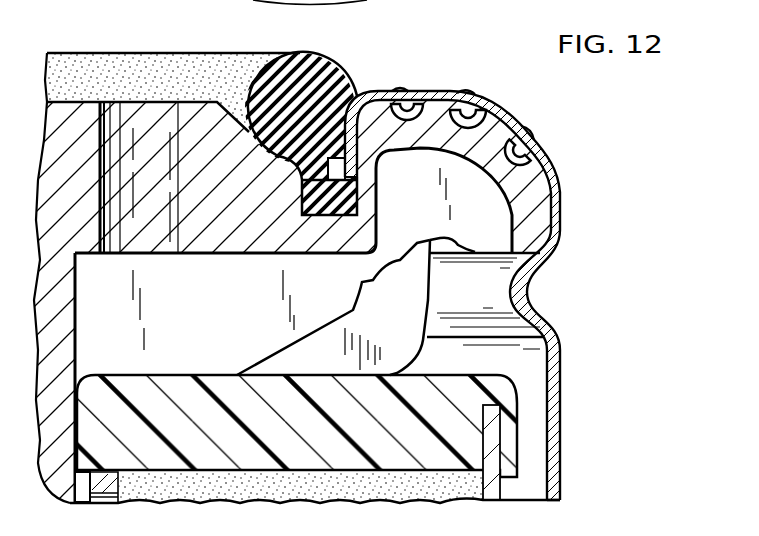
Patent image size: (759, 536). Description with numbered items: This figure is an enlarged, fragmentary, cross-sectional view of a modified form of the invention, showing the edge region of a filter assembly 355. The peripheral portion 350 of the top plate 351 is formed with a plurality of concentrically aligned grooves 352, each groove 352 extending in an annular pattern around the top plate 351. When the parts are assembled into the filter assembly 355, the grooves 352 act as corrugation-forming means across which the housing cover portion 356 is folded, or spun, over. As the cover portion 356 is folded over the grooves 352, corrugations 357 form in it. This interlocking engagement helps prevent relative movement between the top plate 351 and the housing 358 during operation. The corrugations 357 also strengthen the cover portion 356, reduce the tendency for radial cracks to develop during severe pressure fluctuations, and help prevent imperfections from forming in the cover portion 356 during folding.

The peripheral portion 350 is at (437, 122).
The top plate 351 is at (195, 102).
The grooves 352 is at (397, 112).
The filter assembly 355 is at (575, 329).
The housing cover portion 356 is at (562, 183).
The corrugations 357 is at (400, 89).
The housing 358 is at (565, 407).